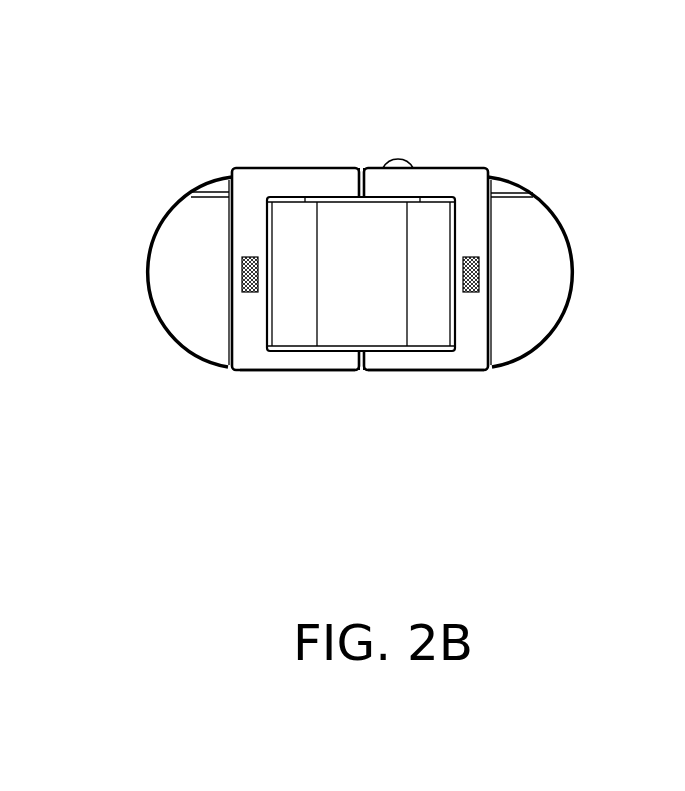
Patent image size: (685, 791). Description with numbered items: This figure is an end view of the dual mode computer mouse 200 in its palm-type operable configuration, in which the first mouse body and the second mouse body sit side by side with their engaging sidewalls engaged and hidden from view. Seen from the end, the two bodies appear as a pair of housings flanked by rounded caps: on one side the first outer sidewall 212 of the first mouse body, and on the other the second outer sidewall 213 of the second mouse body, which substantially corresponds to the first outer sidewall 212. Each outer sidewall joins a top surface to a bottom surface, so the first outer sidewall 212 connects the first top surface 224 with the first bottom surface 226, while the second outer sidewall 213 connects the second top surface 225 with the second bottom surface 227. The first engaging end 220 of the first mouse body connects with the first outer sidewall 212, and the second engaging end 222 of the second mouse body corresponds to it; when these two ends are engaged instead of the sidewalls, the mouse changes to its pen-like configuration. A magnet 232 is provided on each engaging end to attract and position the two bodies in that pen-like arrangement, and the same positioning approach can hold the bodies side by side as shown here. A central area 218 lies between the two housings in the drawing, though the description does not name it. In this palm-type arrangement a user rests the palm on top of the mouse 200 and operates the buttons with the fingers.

The dual mode computer mouse 200 is at (640, 53).
The first outer sidewall 212 is at (572, 287).
The second outer sidewall 213 is at (165, 208).
The display window 218 is at (338, 332).
The first engaging end 220 is at (533, 235).
The second engaging end 222 is at (162, 267).
The first top surface 224 is at (443, 168).
The second top surface 225 is at (297, 168).
The first bottom surface 226 is at (443, 373).
The second bottom surface 227 is at (297, 373).
The magnet 232 is at (242, 272).